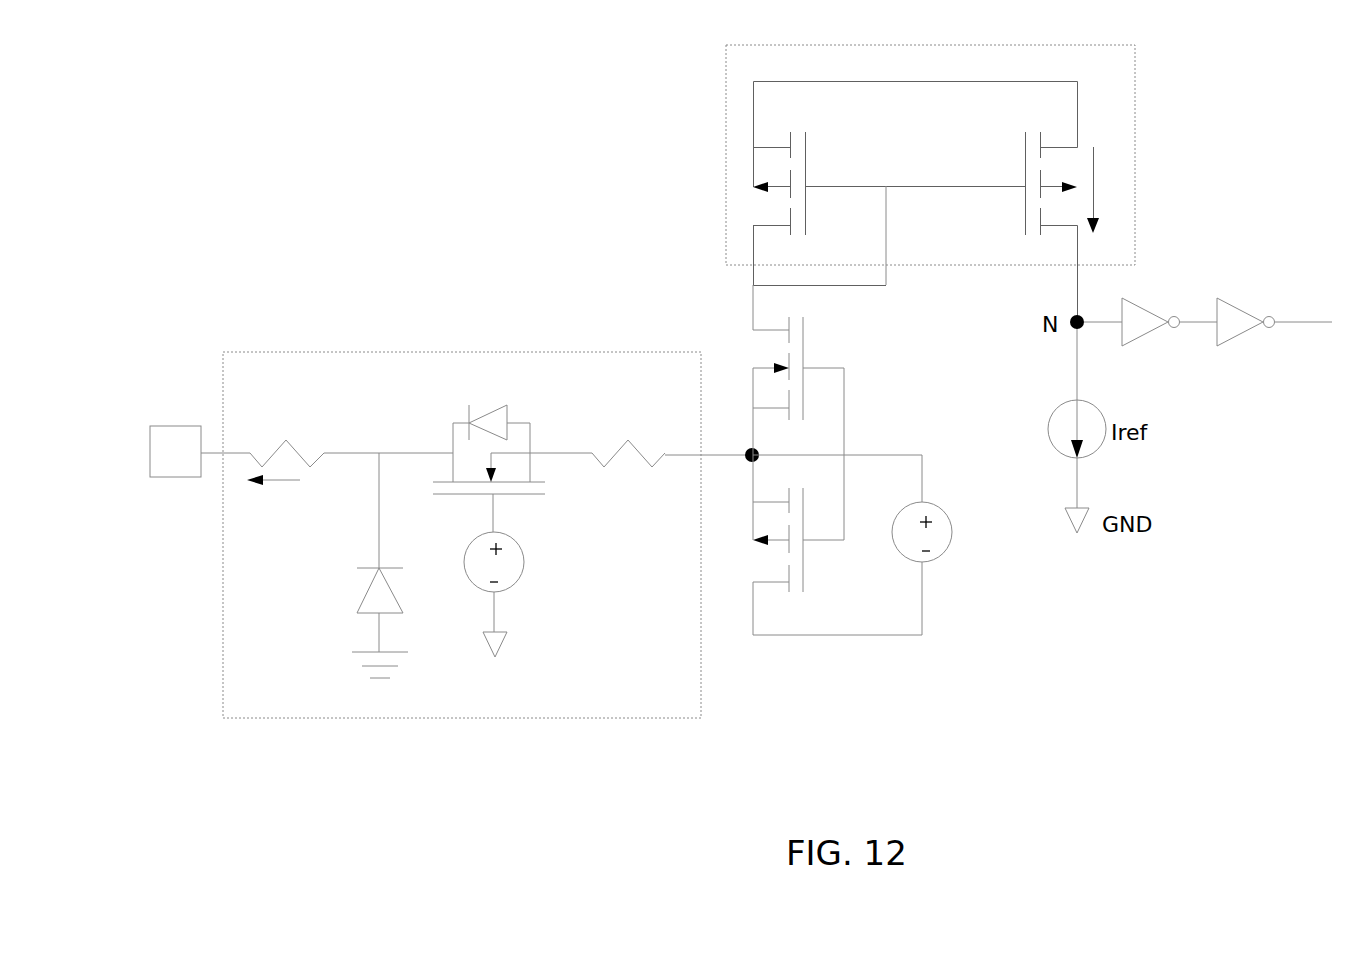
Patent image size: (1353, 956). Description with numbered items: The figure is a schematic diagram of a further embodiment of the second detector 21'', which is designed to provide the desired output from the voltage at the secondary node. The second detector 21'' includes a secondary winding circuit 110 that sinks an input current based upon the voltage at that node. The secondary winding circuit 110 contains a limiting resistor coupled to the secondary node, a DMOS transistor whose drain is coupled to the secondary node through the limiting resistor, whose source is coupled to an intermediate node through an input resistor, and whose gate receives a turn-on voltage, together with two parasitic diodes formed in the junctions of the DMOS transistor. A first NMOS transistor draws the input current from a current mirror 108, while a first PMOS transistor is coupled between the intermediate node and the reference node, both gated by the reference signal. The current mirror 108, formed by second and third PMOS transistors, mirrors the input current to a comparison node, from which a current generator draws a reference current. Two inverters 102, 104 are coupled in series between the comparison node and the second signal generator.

The current mirror 108 is at (1085, 45).
The secondary winding circuit 110 is at (672, 352).
The inverter 102 is at (1158, 310).
The inverter 104 is at (1253, 310).
The second detector 21'' is at (715, 435).